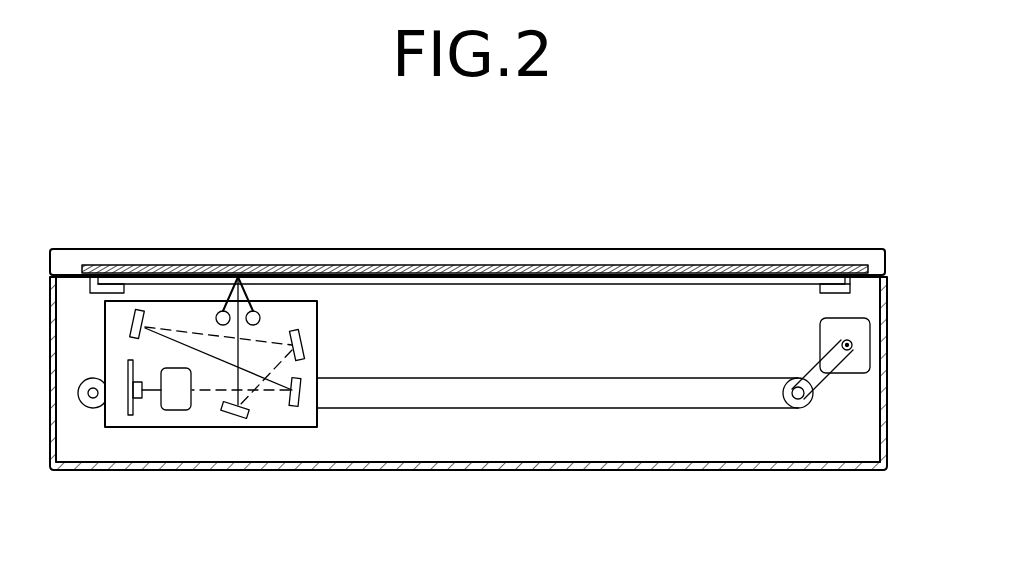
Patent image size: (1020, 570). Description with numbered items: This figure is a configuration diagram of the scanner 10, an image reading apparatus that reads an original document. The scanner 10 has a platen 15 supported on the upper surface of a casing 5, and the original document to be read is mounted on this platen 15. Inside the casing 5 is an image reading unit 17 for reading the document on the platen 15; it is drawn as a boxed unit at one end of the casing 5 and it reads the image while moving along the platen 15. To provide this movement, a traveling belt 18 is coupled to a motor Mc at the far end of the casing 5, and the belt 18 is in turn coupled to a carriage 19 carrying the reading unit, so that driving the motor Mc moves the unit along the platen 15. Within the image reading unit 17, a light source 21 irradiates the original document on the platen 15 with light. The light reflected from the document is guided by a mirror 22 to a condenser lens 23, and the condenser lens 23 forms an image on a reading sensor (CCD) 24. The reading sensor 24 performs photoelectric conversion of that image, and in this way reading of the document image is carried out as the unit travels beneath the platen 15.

The scanner 10 is at (386, 237).
The platen 15 is at (762, 280).
The casing 5 is at (537, 468).
The image reading unit 17 is at (313, 437).
The light source 21 is at (262, 319).
The carriage 19 is at (318, 344).
The mirror 22 is at (237, 420).
The condenser lens 23 is at (167, 411).
The reading sensor (CCD) 24 is at (128, 412).
The traveling belt 18 is at (600, 378).
The motor Mc is at (822, 337).